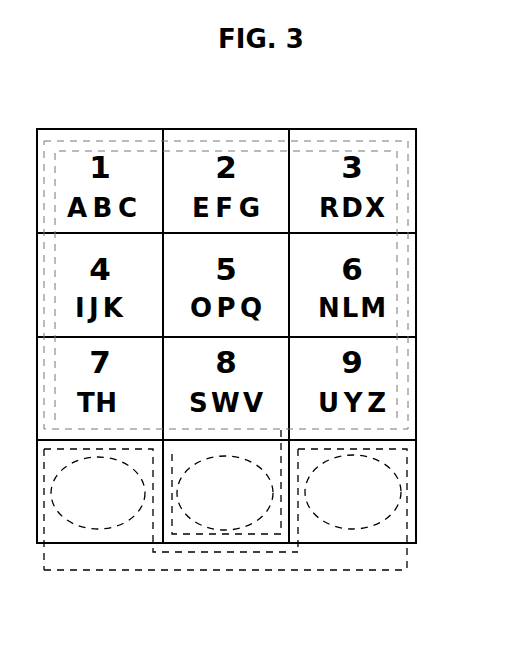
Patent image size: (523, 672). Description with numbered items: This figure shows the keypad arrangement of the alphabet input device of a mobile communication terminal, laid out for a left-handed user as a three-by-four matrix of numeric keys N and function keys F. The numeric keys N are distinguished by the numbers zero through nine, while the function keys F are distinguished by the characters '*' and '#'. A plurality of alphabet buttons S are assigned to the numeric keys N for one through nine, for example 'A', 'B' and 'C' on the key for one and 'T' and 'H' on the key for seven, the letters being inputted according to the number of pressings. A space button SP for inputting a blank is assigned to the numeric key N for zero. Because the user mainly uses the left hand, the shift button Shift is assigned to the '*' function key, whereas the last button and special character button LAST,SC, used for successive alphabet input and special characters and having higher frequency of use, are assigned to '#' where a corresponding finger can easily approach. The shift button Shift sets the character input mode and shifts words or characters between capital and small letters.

The numeric keys N is at (408, 160).
The alphabet buttons S is at (397, 207).
The function keys F is at (408, 463).
The shift button Shift is at (117, 527).
The space button SP is at (258, 525).
The last button and special character button LAST,SC is at (375, 525).